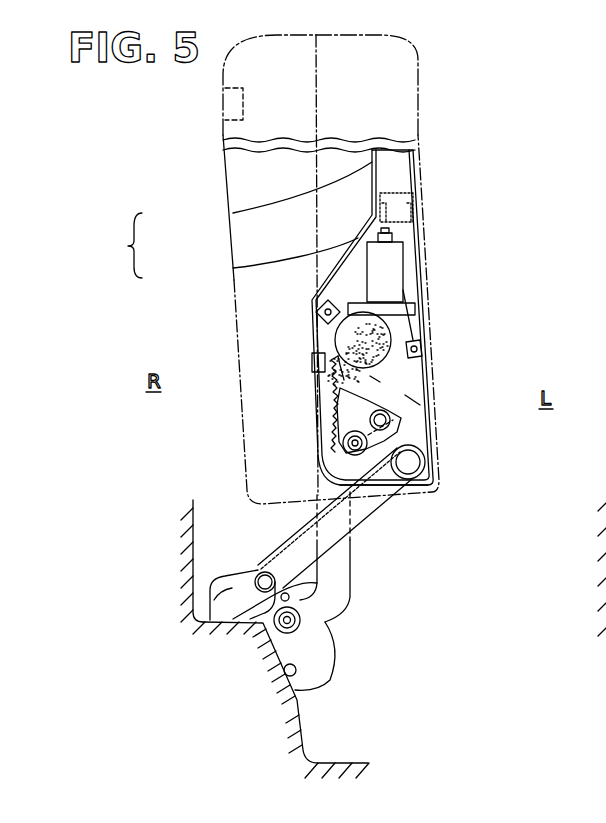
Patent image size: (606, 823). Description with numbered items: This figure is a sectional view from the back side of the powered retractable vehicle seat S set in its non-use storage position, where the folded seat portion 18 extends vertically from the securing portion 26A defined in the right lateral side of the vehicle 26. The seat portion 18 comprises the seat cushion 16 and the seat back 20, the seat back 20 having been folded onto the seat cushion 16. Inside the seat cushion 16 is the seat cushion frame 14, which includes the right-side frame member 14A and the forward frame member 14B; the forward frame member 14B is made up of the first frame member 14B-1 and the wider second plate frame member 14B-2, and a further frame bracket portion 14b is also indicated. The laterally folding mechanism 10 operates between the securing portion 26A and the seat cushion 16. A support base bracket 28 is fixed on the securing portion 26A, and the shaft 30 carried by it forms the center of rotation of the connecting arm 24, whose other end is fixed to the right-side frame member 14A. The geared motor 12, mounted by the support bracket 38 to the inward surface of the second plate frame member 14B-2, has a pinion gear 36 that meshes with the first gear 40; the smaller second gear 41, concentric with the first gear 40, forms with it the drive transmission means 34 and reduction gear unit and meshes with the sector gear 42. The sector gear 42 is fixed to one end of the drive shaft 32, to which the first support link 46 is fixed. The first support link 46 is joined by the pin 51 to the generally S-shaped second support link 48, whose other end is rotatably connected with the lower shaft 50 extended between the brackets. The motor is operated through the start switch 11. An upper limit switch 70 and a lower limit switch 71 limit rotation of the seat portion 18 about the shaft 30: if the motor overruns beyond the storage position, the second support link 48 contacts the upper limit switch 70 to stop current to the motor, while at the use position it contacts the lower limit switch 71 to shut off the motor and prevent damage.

The powered retractable vehicle seat S is at (540, 88).
The laterally folding mechanism 10 is at (523, 236).
The start switch 11 is at (223, 102).
The geared motor 12 is at (410, 268).
The seat cushion frame 14 is at (436, 333).
The right-side frame member 14A is at (433, 474).
The forward frame member 14B is at (114, 245).
The first frame member 14B-1 is at (233, 213).
The second plate frame member 14B-2 is at (233, 268).
The frame bracket 14b is at (410, 398).
The seat cushion 16 is at (418, 133).
The seat portion 18 is at (421, 511).
The seat back 20 is at (225, 135).
The connecting arm 24 is at (284, 553).
The vehicle 26 is at (205, 511).
The securing portion 26A is at (198, 621).
The support base bracket 28 is at (228, 578).
The shaft 30 is at (256, 586).
The drive shaft 32 is at (392, 418).
The drive transmission means 34 is at (382, 378).
The pinion gear 36 is at (346, 333).
The support bracket 38 is at (317, 364).
The first gear 40 is at (330, 349).
The second gear 41 is at (342, 380).
The sector gear 42 is at (335, 404).
The first support link 46 is at (412, 442).
The second support link 48 is at (342, 577).
The lower shaft 50 is at (305, 630).
The pin 51 is at (342, 444).
The upper limit switch 70 is at (281, 599).
The lower limit switch 71 is at (296, 672).